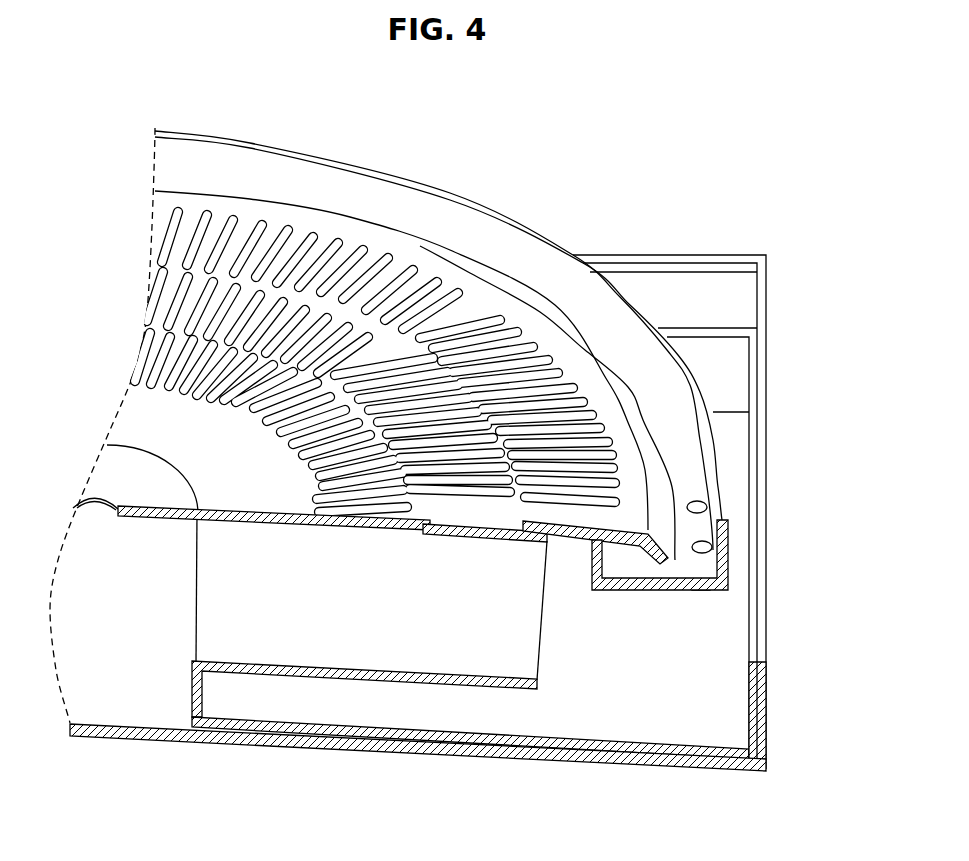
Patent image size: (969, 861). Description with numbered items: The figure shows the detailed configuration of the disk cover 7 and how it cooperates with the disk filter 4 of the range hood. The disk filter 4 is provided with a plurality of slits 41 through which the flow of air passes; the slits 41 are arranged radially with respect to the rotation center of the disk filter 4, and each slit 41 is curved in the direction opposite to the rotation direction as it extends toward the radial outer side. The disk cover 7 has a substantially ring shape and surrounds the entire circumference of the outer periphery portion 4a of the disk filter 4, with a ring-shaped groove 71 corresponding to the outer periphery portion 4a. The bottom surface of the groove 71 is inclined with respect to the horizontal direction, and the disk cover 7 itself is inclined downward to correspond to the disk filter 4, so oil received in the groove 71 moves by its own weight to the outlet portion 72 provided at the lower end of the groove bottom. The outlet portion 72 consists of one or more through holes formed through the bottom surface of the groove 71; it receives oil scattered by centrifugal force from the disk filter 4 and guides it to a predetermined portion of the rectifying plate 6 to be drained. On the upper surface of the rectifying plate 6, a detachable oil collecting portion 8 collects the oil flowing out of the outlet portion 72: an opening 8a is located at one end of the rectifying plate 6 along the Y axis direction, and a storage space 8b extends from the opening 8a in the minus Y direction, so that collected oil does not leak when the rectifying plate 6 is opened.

The disk filter 4 is at (327, 226).
The slits 41 is at (172, 306).
The disk cover 7 is at (508, 226).
The groove 71 is at (645, 400).
The outer periphery portion 4a is at (658, 477).
The outlet portion 72 is at (702, 546).
The rectifying plate 6 is at (150, 736).
The oil collecting portion 8 is at (565, 702).
The opening 8a is at (693, 702).
The storage space 8b is at (303, 698).